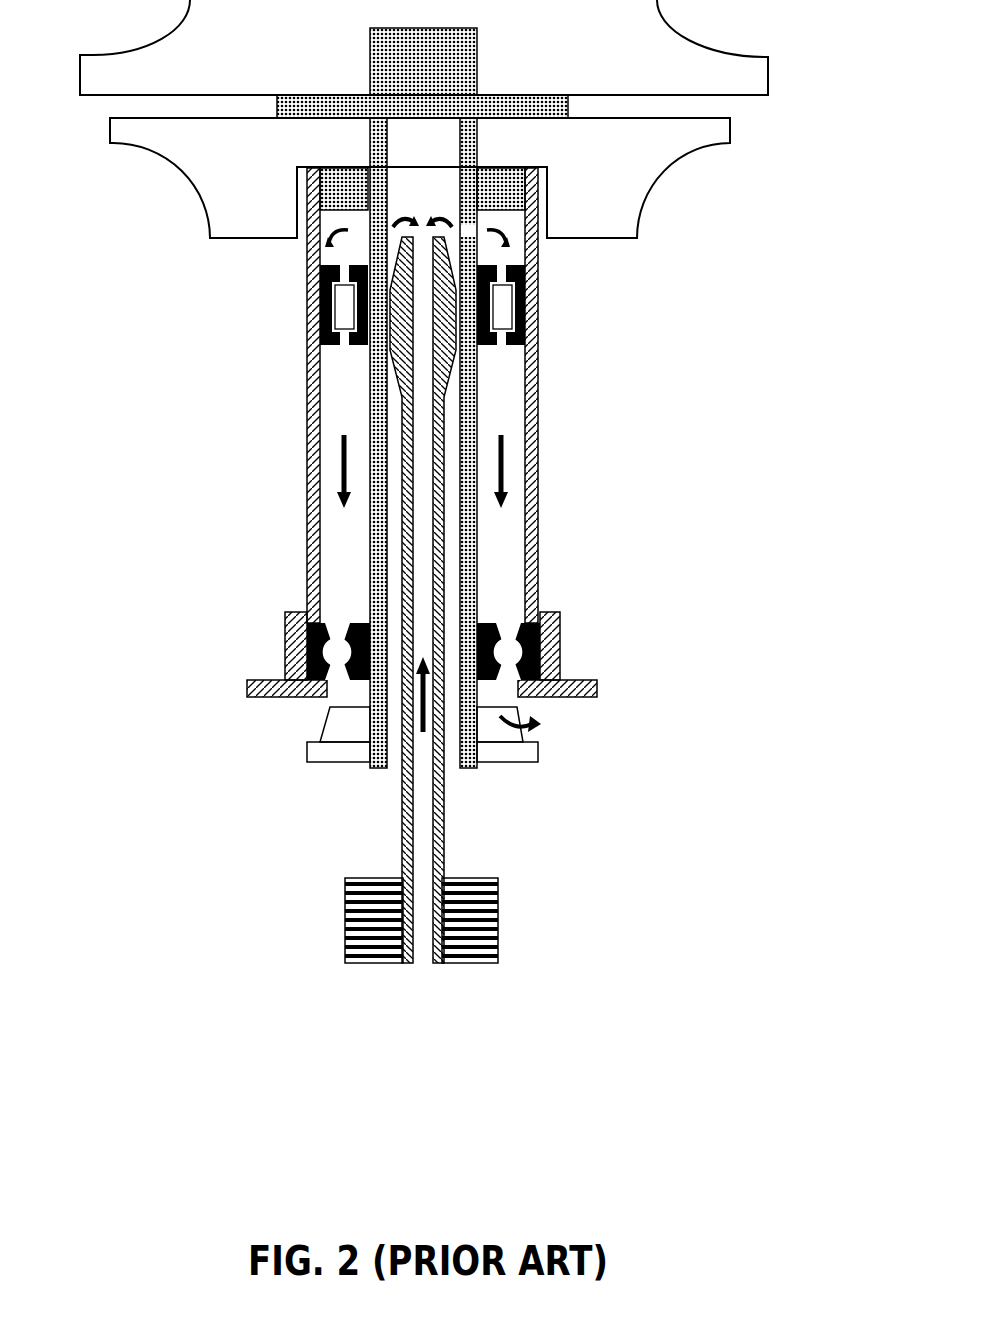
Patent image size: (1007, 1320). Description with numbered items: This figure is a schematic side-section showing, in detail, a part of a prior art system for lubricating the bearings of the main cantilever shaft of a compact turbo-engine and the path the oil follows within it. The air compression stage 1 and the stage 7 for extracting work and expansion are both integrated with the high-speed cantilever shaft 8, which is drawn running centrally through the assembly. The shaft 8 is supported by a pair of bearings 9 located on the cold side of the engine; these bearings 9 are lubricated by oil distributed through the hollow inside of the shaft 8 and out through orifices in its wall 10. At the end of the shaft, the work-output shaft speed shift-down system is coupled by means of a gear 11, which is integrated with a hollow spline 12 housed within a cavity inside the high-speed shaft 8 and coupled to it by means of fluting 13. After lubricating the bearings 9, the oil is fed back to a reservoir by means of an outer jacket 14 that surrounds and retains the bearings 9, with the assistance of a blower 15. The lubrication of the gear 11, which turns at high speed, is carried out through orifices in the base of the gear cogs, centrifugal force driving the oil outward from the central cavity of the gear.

The air compression stage 1 is at (735, 260).
The stage for extracting work and expansion 7 is at (795, 172).
The high-speed cantilever shaft 8 is at (370, 147).
The bearings 9 is at (302, 623).
The orifices in the shaft wall 10 is at (387, 228).
The gear 11 is at (385, 900).
The hollow spline 12 is at (597, 853).
The fluting 13 is at (622, 422).
The outer jacket 14 is at (645, 582).
The blower 15 is at (335, 730).